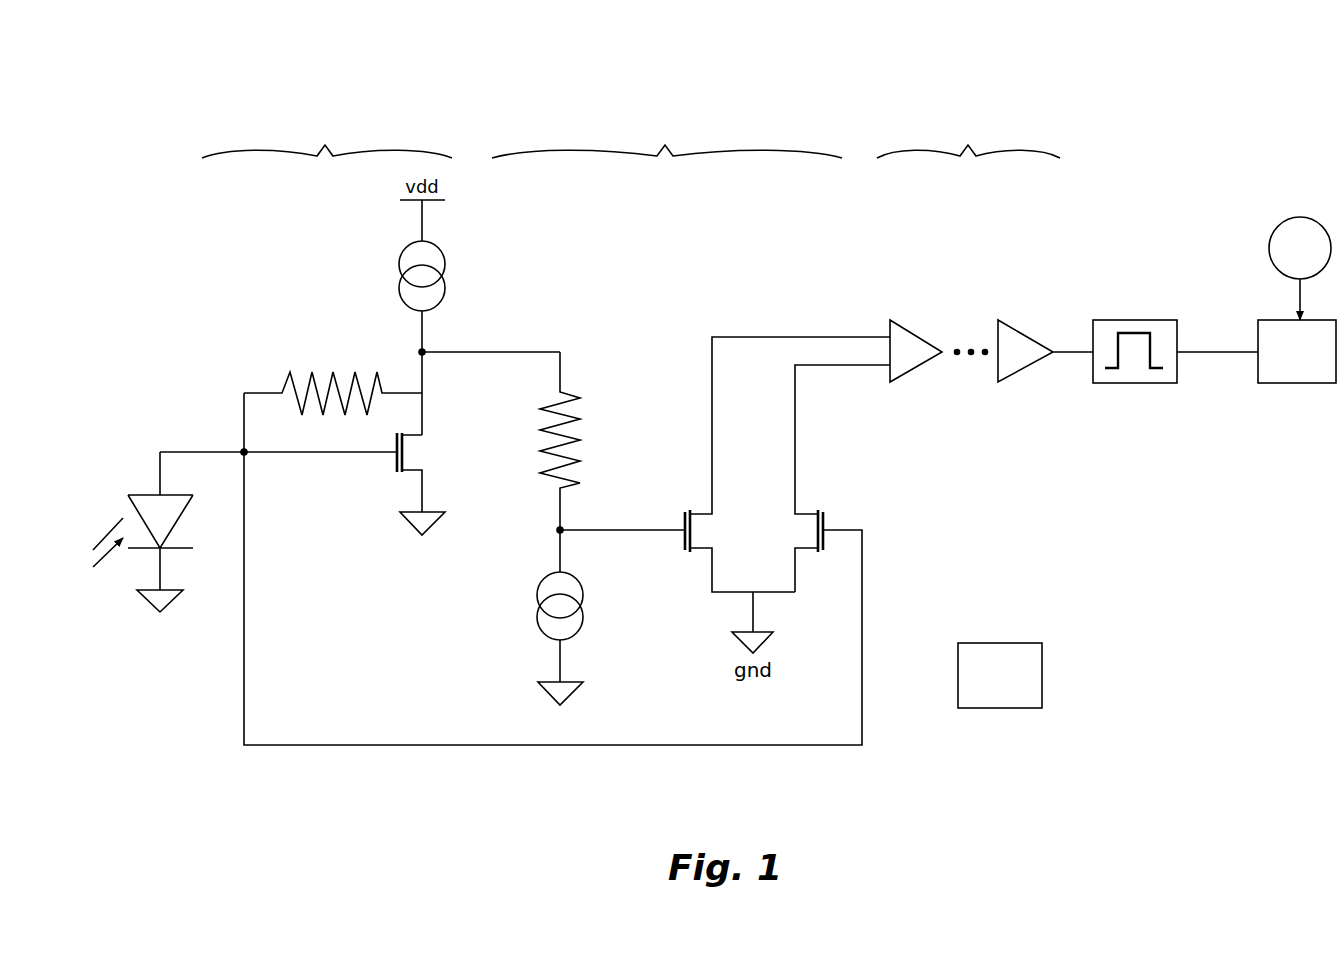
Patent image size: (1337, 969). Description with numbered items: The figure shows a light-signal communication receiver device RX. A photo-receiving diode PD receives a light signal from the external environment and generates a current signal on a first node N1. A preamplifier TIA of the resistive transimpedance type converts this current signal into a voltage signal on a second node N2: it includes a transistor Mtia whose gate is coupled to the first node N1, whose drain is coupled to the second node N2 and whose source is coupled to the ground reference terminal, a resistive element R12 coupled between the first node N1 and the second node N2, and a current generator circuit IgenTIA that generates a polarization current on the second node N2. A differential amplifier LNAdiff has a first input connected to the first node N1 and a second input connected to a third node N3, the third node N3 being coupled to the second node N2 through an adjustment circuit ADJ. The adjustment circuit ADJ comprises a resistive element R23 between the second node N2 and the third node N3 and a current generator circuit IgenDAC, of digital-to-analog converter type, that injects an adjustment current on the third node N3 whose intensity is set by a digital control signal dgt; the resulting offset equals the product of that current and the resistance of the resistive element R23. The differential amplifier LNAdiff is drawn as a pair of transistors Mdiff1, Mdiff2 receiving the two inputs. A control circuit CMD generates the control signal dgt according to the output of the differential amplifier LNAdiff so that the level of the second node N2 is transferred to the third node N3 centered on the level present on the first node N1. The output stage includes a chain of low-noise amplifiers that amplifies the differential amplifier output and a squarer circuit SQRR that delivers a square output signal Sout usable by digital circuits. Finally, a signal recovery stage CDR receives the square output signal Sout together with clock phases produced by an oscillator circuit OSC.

The light-signal communication receiver device RX is at (447, 112).
The preamplifier TIA is at (327, 138).
The differential amplifier LNAdiff is at (667, 138).
The photo-receiving diode PD is at (135, 480).
The first node N1 is at (242, 450).
The second node N2 is at (420, 350).
The third node N3 is at (555, 530).
The resistive element R12 is at (300, 367).
The resistive element R23 is at (538, 439).
The adjustment circuit ADJ is at (582, 380).
The transistor Mtia is at (390, 485).
The current generator circuit IgenTIA is at (413, 242).
The current generator circuit IgenDAC is at (542, 635).
The control signal dgt is at (538, 607).
The differential pair transistor 1 Mdiff1 is at (807, 503).
The differential pair transistor 2 Mdiff2 is at (697, 503).
The squarer circuit SQRR is at (1133, 318).
The square output signal Sout is at (1217, 339).
The signal recovery stage CDR is at (1297, 351).
The oscillator circuit OSC is at (1300, 268).
The control circuit CMD is at (1000, 675).